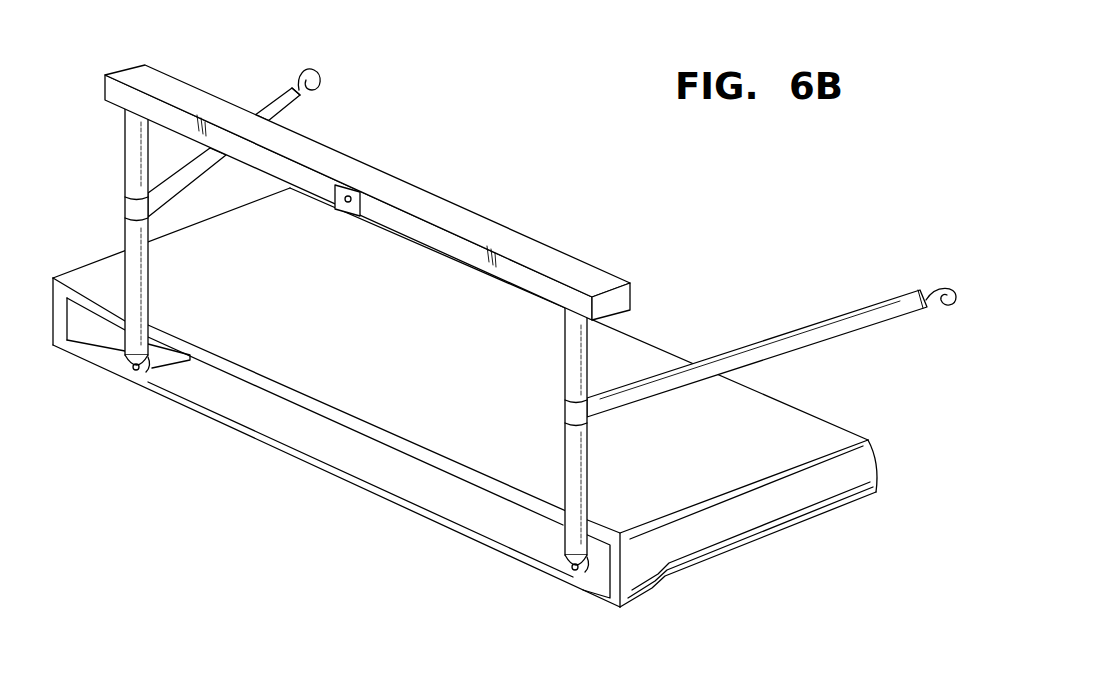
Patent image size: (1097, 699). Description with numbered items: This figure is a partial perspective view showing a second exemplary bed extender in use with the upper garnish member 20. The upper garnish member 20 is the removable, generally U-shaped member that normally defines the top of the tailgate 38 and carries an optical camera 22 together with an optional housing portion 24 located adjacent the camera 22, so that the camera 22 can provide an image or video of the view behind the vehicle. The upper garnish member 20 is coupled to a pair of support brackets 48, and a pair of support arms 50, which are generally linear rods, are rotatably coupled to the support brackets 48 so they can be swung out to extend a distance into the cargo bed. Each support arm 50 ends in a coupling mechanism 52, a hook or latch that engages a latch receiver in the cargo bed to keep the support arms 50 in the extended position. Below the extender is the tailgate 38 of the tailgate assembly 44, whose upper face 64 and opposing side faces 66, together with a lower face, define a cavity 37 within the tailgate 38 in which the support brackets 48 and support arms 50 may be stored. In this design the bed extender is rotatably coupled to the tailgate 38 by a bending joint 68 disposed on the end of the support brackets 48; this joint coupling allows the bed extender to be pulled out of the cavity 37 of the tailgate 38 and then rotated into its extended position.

The upper garnish member 20 is at (536, 238).
The camera 22 is at (358, 214).
The housing portion 24 is at (344, 199).
The cavity 37 is at (322, 442).
The tailgate 38 is at (632, 612).
The tailgate assembly 44 is at (759, 610).
The support brackets 48 is at (125, 153).
The support arms 50 is at (174, 184).
The coupling mechanism 52 is at (313, 77).
The upper face 64 is at (426, 356).
The side faces 66 is at (800, 507).
The bending joint 68 is at (134, 369).